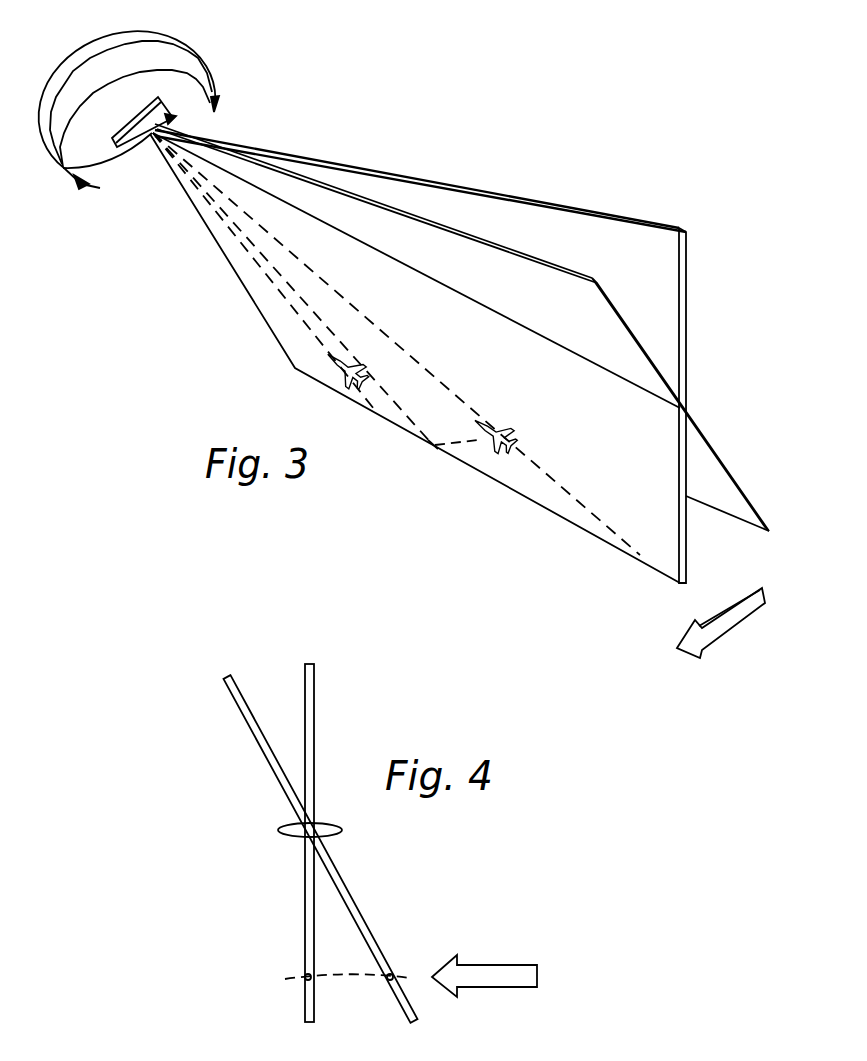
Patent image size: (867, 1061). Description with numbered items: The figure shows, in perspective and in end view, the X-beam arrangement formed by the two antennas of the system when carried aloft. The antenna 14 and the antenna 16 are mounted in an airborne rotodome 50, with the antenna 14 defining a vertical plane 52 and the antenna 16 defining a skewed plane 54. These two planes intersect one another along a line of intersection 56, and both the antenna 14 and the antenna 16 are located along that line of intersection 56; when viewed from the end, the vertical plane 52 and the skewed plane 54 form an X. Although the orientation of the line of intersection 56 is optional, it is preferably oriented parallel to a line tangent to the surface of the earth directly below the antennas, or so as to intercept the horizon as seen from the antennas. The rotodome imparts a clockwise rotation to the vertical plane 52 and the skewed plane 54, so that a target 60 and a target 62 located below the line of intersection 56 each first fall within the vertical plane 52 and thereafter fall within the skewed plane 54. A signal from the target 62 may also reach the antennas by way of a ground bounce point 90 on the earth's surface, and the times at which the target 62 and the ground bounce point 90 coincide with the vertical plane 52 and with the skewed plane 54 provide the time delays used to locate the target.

In FIG. 3, the airborne rotodome 50 is at (183, 42).
In FIG. 3, the antenna 16 is at (165, 104).
In FIG. 3, the antenna 14 is at (173, 118).
In FIG. 3, the vertical plane 52 is at (687, 305).
In FIG. 4, the vertical plane 52 is at (313, 702).
In FIG. 3, the skewed plane 54 is at (614, 299).
In FIG. 4, the skewed plane 54 is at (356, 896).
In FIG. 3, the line of intersection 56 is at (500, 318).
In FIG. 4, the line of intersection 56 is at (487, 963).
In FIG. 3, the target 60 is at (327, 361).
In FIG. 3, the target 62 is at (482, 442).
In FIG. 3, the ground bounce point 90 is at (432, 443).